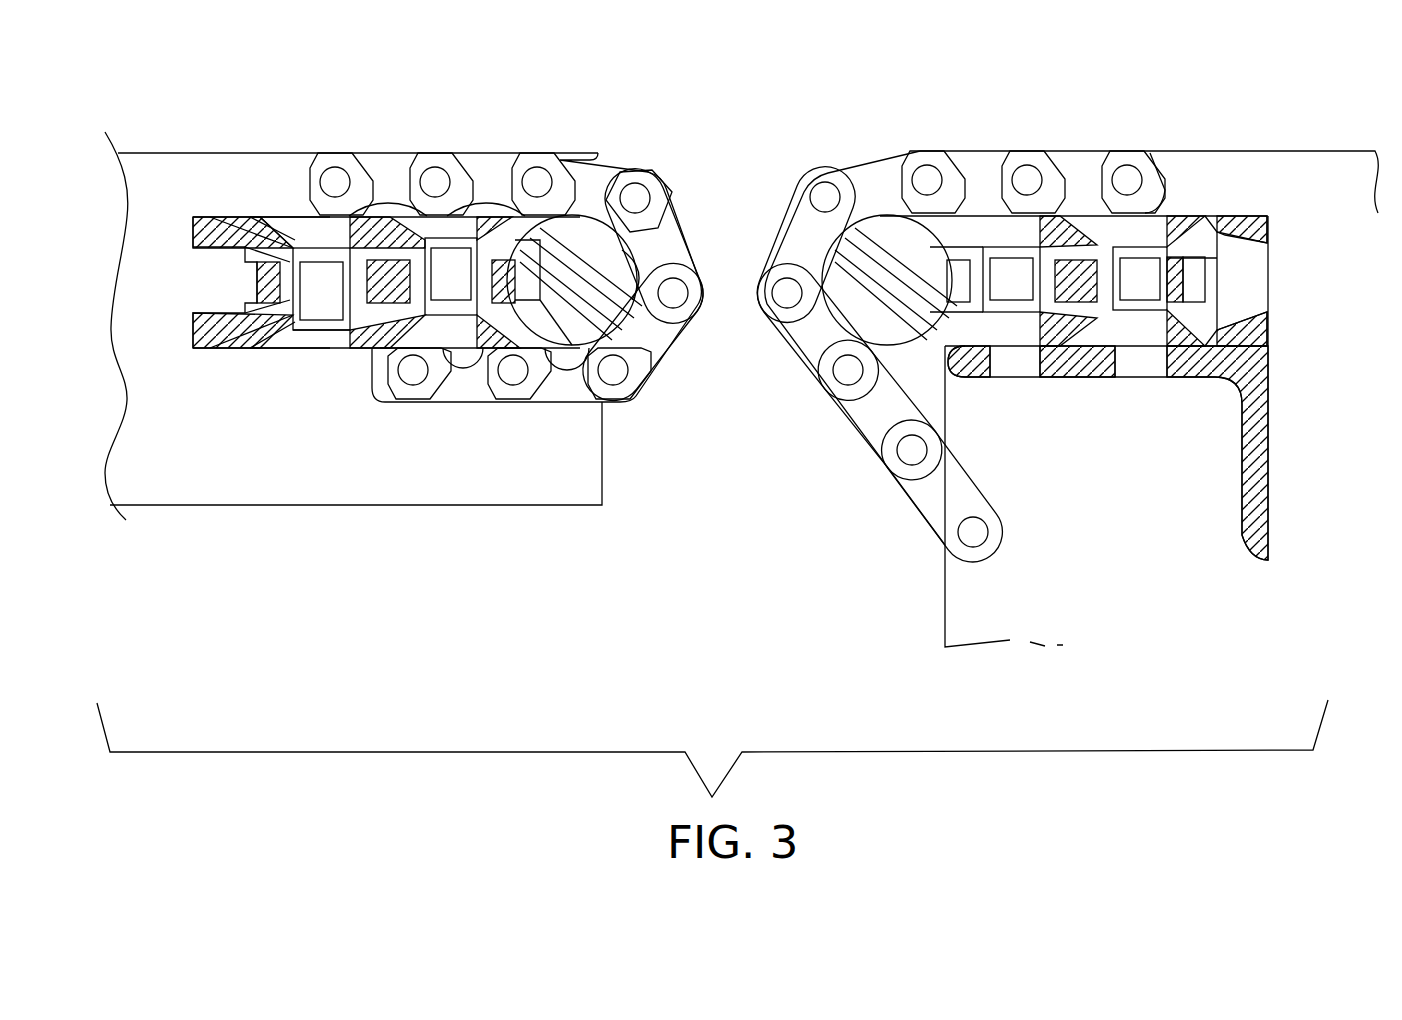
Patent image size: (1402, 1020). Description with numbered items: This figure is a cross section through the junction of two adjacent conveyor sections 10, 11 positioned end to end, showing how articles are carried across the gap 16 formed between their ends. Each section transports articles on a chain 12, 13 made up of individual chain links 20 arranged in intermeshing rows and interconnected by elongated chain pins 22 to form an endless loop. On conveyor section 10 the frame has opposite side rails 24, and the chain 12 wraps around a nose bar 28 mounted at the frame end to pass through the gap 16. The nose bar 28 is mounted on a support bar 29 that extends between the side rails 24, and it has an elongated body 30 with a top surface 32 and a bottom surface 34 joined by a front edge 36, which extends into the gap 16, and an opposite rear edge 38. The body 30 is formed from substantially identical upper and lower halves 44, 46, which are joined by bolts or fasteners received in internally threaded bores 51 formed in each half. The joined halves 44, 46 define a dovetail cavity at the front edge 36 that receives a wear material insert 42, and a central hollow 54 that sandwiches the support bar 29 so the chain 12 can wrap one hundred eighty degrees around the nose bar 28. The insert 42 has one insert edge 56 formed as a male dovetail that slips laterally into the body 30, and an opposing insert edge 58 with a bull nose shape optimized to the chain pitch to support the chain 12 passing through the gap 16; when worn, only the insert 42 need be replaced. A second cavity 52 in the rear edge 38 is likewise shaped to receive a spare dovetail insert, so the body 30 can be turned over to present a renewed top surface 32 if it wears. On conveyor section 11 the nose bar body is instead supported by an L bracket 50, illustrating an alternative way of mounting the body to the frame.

The conveyor section 10 is at (630, 125).
The conveyor section 11 is at (835, 125).
The chain 12 is at (657, 178).
The chain 13 is at (878, 160).
The gap 16 is at (727, 290).
The chain links 20 is at (577, 385).
The chain pins 22 is at (618, 378).
The side rails 24 is at (392, 505).
The nose bar 28 is at (262, 190).
The support bar 29 is at (378, 298).
The elongated body 30 is at (392, 356).
The top surface 32 is at (290, 224).
The bottom surface 34 is at (273, 354).
The front edge 36 is at (573, 312).
The rear edge 38 is at (204, 227).
The wear material insert 42 is at (612, 242).
The upper half 44 is at (298, 236).
The lower half 46 is at (307, 333).
The L bracket 50 is at (1270, 445).
The internally threaded bores 51 is at (730, 284).
The second cavity 52 is at (222, 308).
The central hollow 54 is at (396, 262).
The insert edge 56 is at (515, 262).
The insert edge 58 is at (645, 268).